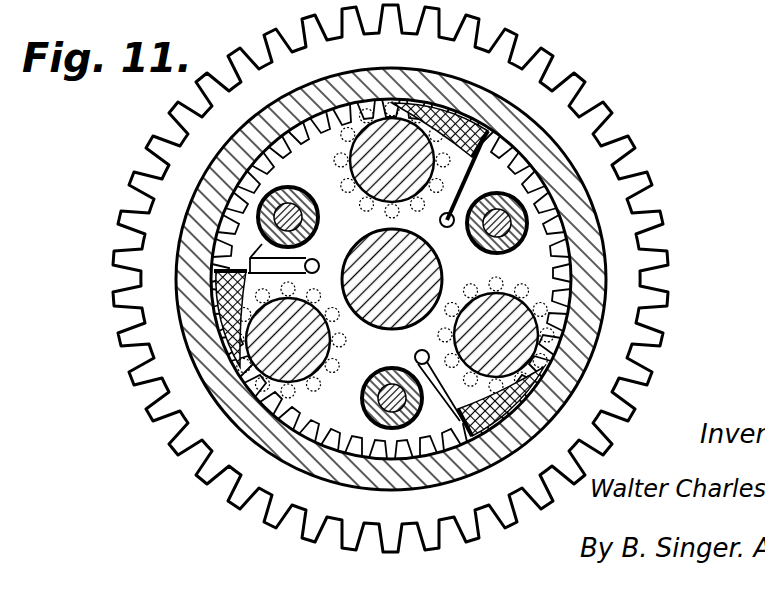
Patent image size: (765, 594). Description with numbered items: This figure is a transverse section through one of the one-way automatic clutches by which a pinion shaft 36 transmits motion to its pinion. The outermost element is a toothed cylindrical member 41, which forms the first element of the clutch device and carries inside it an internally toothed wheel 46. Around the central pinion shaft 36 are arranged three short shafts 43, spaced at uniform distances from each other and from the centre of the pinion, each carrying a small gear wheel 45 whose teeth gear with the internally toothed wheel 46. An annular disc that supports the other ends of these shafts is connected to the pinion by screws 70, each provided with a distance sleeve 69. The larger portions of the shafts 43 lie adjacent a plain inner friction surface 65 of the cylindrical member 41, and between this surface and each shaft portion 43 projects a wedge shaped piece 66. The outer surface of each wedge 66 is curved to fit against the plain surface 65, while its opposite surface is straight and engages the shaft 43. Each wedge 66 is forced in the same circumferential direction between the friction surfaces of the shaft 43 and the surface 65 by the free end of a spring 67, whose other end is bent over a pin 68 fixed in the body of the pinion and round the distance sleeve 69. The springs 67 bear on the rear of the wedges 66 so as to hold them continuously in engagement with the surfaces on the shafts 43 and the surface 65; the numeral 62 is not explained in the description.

The pinion shaft 36 is at (440, 282).
The cylindrical member 41 is at (553, 78).
The short shaft 43 is at (346, 162).
The small gear wheel 45 is at (322, 300).
The internally toothed wheel 46 is at (515, 162).
The lever arm 62 is at (213, 272).
The plain inner friction surface 65 is at (512, 118).
The wedge shaped piece 66 is at (437, 113).
The spring 67 is at (467, 173).
The pin 68 is at (305, 263).
The distance sleeve 69 is at (361, 400).
The screw 70 is at (366, 420).